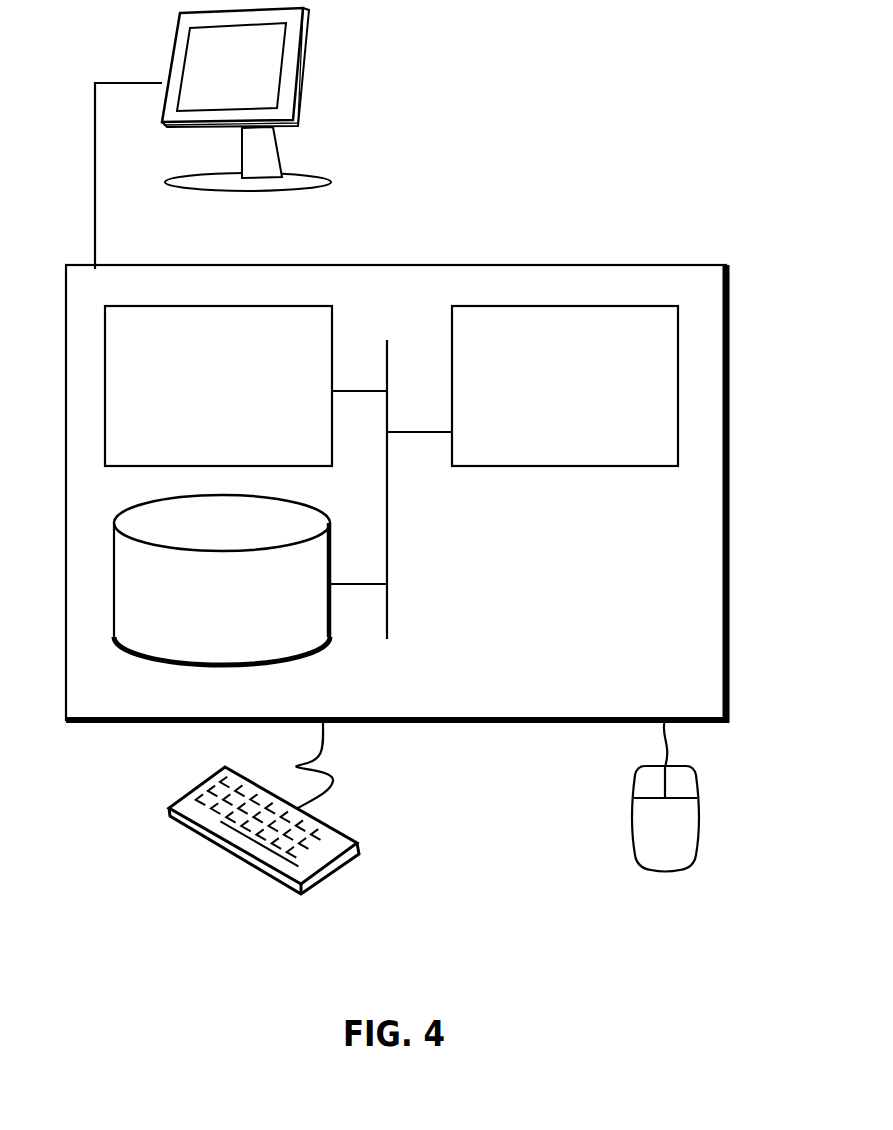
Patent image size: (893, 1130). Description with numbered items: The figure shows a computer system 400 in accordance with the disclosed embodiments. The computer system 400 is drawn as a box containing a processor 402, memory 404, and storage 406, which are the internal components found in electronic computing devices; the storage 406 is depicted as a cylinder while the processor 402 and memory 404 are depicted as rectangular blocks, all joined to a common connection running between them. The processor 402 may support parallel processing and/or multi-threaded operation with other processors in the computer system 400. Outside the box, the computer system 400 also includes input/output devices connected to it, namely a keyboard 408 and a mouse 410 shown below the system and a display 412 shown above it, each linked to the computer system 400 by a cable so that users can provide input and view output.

The computer system 400 is at (442, 242).
The processor 402 is at (590, 399).
The memory 404 is at (240, 397).
The storage 406 is at (247, 608).
The keyboard 408 is at (189, 829).
The mouse 410 is at (687, 839).
The display 412 is at (213, 138).